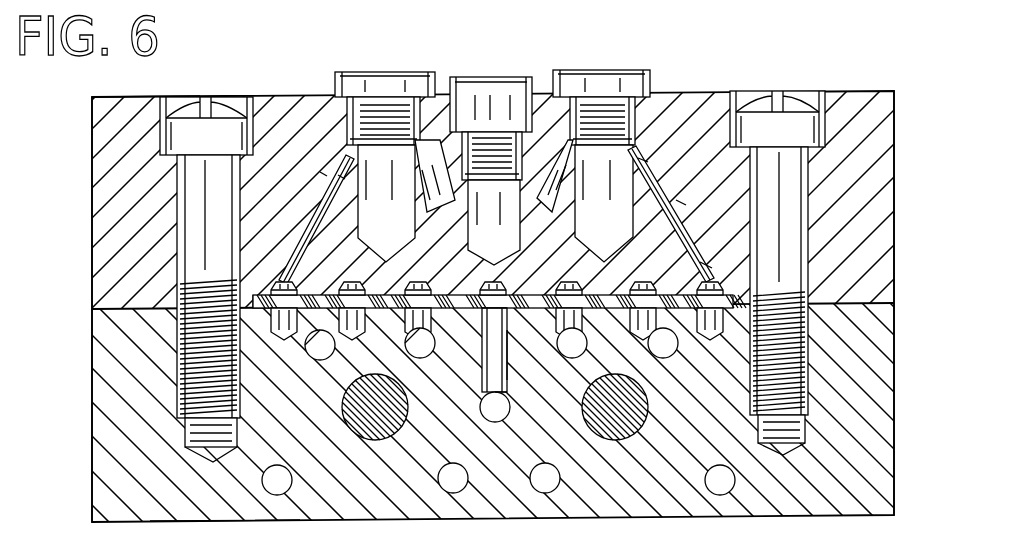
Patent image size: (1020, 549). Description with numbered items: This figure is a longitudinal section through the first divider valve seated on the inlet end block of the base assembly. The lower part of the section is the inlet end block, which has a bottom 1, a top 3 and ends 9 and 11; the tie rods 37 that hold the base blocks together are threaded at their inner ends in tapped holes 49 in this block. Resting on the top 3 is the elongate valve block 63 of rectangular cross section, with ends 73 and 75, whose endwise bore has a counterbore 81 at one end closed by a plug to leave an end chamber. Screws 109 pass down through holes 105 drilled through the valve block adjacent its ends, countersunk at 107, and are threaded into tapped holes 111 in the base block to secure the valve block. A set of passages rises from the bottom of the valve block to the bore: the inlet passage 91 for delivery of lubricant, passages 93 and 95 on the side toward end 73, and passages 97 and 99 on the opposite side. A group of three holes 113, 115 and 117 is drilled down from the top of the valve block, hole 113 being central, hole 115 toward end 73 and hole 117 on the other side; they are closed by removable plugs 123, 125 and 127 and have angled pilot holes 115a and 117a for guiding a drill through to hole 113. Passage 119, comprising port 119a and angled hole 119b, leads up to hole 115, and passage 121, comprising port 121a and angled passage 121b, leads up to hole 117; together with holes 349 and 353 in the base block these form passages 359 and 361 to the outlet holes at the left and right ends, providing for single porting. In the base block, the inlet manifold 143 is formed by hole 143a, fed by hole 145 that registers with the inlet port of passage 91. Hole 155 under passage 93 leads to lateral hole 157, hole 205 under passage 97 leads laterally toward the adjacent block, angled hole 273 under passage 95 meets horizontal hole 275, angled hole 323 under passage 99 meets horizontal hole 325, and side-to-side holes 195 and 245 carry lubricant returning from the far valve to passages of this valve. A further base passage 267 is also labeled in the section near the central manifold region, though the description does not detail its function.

The bottom 1 is at (783, 518).
The top 3 is at (878, 303).
The end 9 is at (92, 450).
The end 11 is at (894, 445).
The tie rod 37 is at (275, 492).
The tapped hole 49 is at (375, 442).
The valve block 63 is at (88, 94).
The end 73 is at (92, 256).
The end 75 is at (894, 252).
The counterbore 81 is at (218, 522).
The inlet passage 91 is at (485, 275).
The passage 93 is at (425, 278).
The passage 95 is at (362, 262).
The passage 97 is at (568, 280).
The passage 99 is at (645, 280).
The hole 105 is at (178, 193).
The countersink 107 is at (162, 119).
The screw 109 is at (205, 108).
The tapped hole 111 is at (185, 340).
The hole 113 is at (492, 198).
The hole 115 is at (383, 179).
The angled pilot hole 115a is at (432, 165).
The hole 117 is at (602, 179).
The angled pilot hole 117a is at (540, 165).
The passage 119 is at (310, 200).
The port 119a is at (247, 278).
The angled hole 119b is at (343, 185).
The passage 121 is at (667, 185).
The port 121a is at (712, 275).
The angled passage 121b is at (640, 150).
The plug 123 is at (488, 77).
The plug 125 is at (380, 72).
The plug 127 is at (615, 70).
The inlet manifold 143 is at (490, 423).
The hole 143a is at (512, 420).
The hole 145 is at (508, 392).
The hole 155 is at (436, 352).
The hole 157 is at (415, 360).
The hole 195 is at (548, 488).
The hole 205 is at (508, 318).
The hole 245 is at (452, 492).
The passage junction 267 is at (513, 390).
The hole 273 is at (335, 335).
The horizontal hole 275 is at (322, 358).
The hole 323 is at (588, 340).
The horizontal hole 325 is at (670, 345).
The hole 349 is at (188, 348).
The hole 353 is at (812, 323).
The passage 359 is at (323, 177).
The passage 361 is at (680, 200).